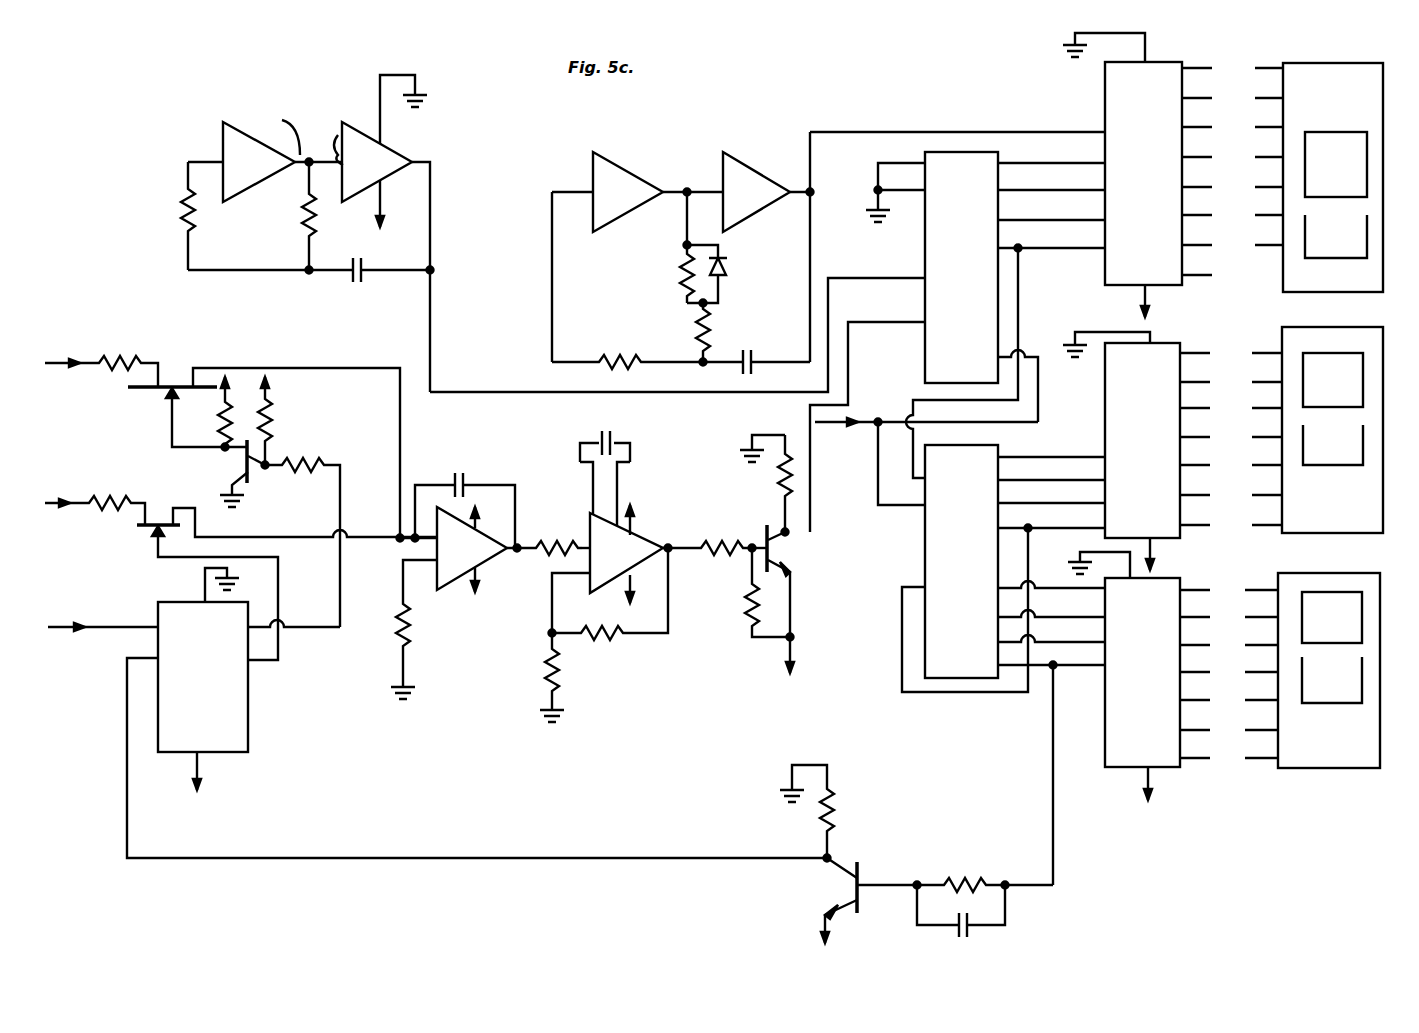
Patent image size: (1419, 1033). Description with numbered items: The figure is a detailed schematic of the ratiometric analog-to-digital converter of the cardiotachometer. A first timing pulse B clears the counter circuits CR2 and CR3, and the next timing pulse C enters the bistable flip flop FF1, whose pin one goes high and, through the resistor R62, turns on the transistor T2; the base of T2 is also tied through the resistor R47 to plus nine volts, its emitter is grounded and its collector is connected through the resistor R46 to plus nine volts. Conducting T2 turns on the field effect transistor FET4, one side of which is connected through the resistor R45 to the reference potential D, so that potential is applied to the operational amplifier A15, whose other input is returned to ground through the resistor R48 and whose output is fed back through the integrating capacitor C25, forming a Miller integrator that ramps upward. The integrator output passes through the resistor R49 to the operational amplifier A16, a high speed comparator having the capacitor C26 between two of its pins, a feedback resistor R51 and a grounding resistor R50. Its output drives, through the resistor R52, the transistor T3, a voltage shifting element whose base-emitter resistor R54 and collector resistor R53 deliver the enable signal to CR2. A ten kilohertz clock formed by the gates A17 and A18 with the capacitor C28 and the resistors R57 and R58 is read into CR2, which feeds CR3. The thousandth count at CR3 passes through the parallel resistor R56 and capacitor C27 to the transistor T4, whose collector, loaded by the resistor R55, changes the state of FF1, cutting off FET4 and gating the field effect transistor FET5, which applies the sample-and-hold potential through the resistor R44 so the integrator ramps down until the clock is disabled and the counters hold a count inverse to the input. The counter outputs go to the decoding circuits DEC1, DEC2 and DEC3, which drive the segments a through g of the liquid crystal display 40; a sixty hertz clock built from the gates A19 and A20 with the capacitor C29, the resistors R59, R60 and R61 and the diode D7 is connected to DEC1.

The operational amplifier A15 is at (466, 549).
The operational amplifier A16 is at (643, 553).
The gate A17 is at (257, 156).
The gate A18 is at (369, 233).
The gate A19 is at (631, 257).
The gate A20 is at (896, 247).
The resistor R44 is at (110, 492).
The resistor R45 is at (130, 338).
The resistor R46 is at (220, 405).
The resistor R47 is at (275, 420).
The resistor R48 is at (408, 626).
The resistor R49 is at (552, 542).
The resistor R50 is at (560, 685).
The resistor R51 is at (605, 645).
The resistor R52 is at (728, 522).
The resistor R53 is at (772, 470).
The resistor R54 is at (746, 592).
The resistor R55 is at (838, 795).
The resistor R56 is at (975, 862).
The resistor R57 is at (175, 210).
The resistor R58 is at (300, 213).
The resistor R59 is at (640, 354).
The resistor R60 is at (731, 334).
The resistor R61 is at (675, 272).
The resistor R62 is at (298, 452).
The integrating capacitor C25 is at (465, 478).
The capacitor C26 is at (618, 437).
The capacitor C27 is at (970, 933).
The capacitor C28 is at (350, 278).
The capacitor C29 is at (755, 360).
The diode D7 is at (726, 274).
The field effect transistor FET4 is at (173, 375).
The field effect transistor FET5 is at (140, 545).
The transistor T2 is at (238, 458).
The transistor T3 is at (772, 544).
The transistor T4 is at (860, 865).
The bistable flip flop FF1 is at (210, 694).
The counter circuit CR2 is at (978, 296).
The counter circuit CR3 is at (978, 566).
The decoding circuit DEC1 is at (1170, 186).
The decoding circuit DEC2 is at (1170, 449).
The decoding circuit DEC3 is at (1170, 684).
The liquid crystal display 40 is at (1395, 67).